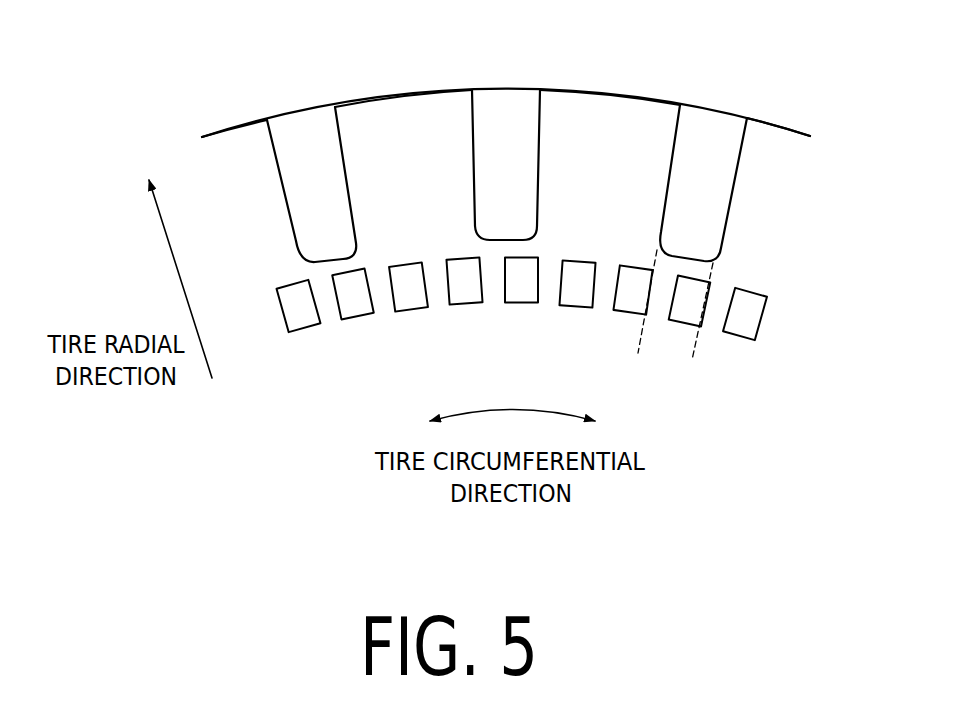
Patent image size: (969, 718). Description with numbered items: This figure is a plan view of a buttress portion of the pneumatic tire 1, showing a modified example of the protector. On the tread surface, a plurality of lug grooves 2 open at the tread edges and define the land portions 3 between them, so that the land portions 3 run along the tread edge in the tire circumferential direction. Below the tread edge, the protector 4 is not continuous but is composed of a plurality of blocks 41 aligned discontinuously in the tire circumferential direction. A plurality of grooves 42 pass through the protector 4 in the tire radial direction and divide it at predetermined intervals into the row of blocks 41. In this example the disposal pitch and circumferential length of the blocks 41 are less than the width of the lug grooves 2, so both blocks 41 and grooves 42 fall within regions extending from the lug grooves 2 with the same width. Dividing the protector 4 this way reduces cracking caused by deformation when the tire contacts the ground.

The pneumatic tire 1 is at (806, 81).
The lug grooves 2 is at (302, 132).
The land portions 3 is at (223, 125).
The protector 4 is at (548, 322).
The blocks 41 is at (632, 318).
The grooves 42 is at (605, 296).